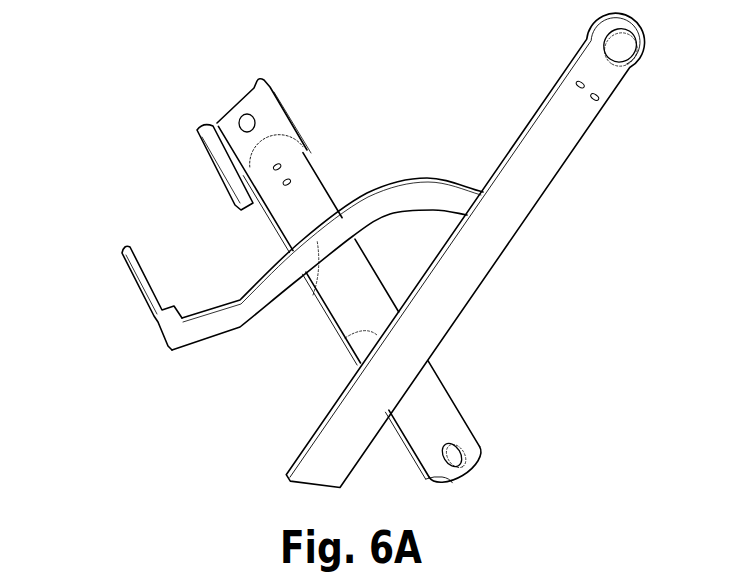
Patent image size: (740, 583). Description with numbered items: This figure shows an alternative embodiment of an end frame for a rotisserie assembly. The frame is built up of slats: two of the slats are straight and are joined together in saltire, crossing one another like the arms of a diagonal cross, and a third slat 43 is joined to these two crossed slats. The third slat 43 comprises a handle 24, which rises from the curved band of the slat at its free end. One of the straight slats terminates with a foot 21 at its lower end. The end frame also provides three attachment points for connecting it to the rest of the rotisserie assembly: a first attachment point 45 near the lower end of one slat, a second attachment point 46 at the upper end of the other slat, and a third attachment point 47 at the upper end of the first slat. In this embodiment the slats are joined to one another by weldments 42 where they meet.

The foot 21 is at (312, 484).
The handle 24 is at (136, 283).
The weldments 42 is at (313, 295).
The third slat 43 is at (428, 178).
The first attachment point 45 is at (452, 443).
The second attachment point 46 is at (603, 50).
The third attachment point 47 is at (242, 115).